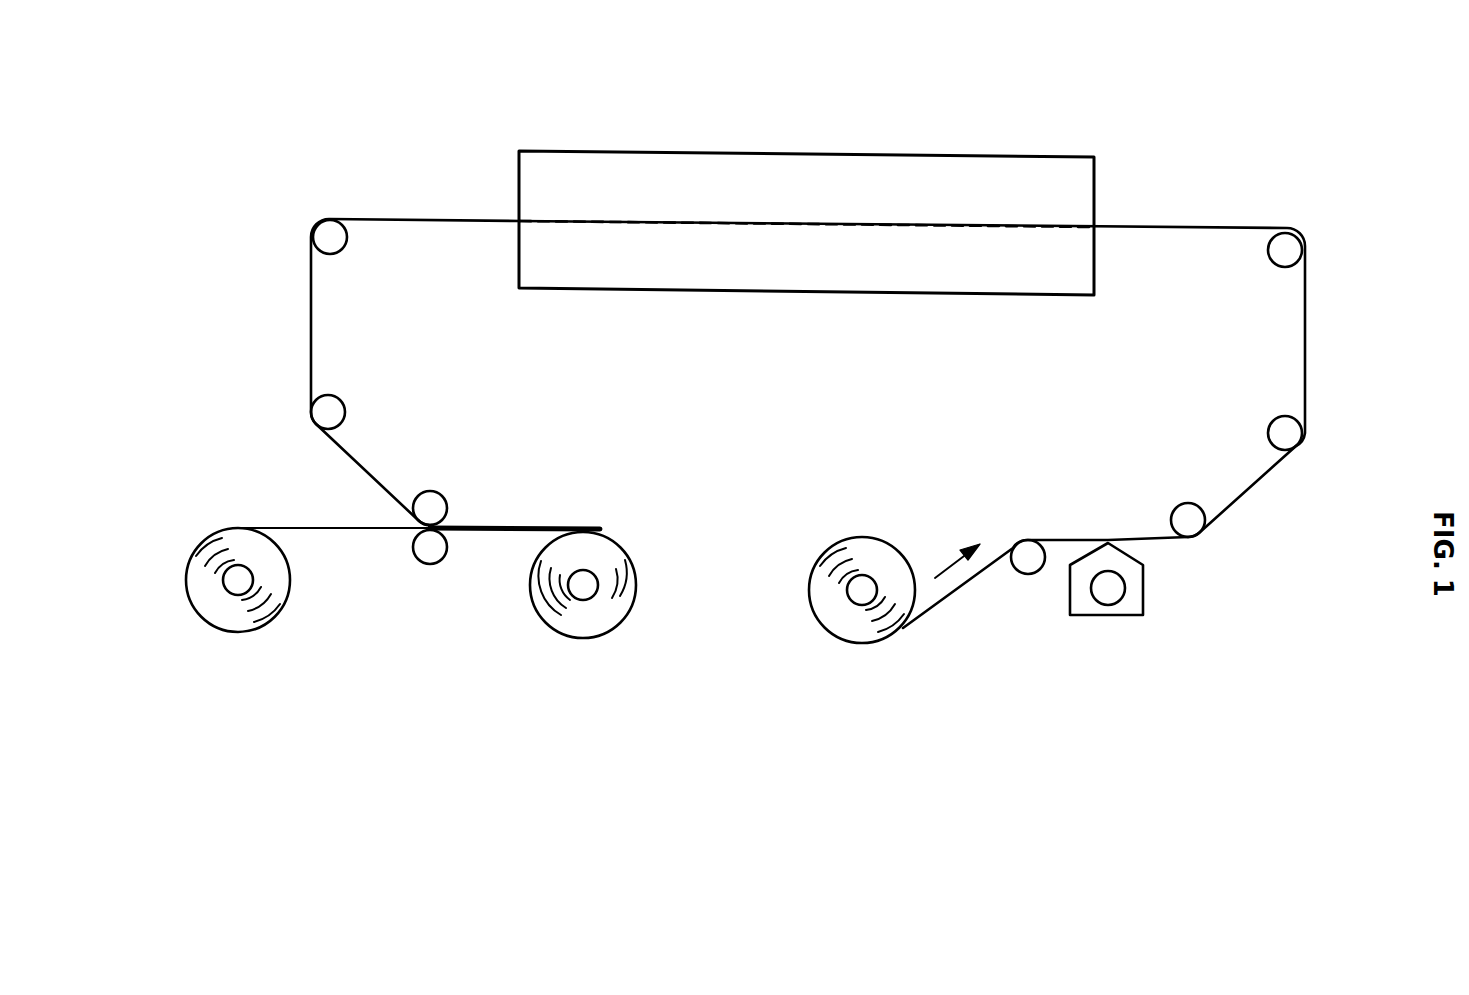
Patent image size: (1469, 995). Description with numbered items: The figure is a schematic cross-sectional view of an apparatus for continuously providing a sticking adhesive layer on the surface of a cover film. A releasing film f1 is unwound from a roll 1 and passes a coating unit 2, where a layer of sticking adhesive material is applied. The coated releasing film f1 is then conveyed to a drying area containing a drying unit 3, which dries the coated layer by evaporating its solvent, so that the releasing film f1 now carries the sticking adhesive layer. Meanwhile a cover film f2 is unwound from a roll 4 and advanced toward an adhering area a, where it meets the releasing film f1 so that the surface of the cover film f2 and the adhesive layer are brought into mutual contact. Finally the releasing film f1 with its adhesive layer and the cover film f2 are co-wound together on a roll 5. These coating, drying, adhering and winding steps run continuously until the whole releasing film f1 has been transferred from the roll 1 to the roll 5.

The roll 1 is at (862, 592).
The coating unit 2 is at (1108, 622).
The drying unit 3 is at (936, 140).
The roll 4 is at (240, 585).
The roll 5 is at (585, 588).
The adhering area a is at (448, 521).
The releasing film f1 is at (947, 597).
The cover film f2 is at (338, 530).